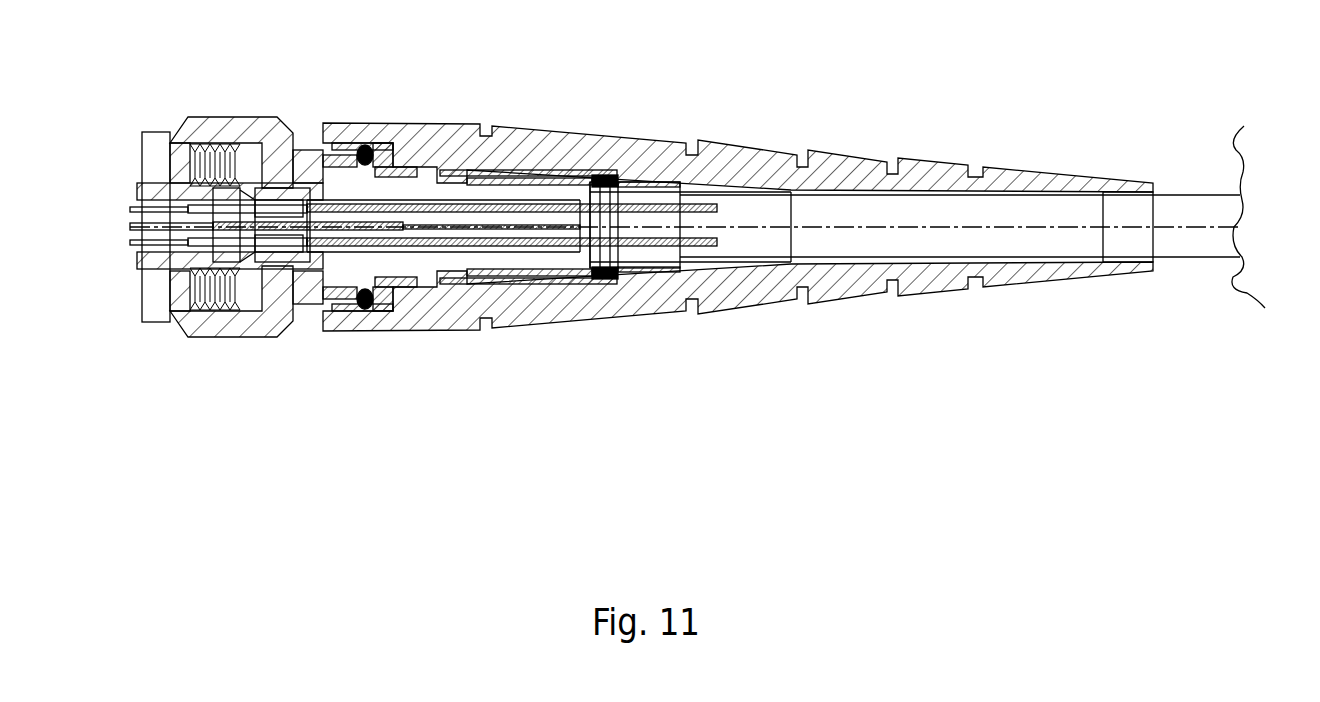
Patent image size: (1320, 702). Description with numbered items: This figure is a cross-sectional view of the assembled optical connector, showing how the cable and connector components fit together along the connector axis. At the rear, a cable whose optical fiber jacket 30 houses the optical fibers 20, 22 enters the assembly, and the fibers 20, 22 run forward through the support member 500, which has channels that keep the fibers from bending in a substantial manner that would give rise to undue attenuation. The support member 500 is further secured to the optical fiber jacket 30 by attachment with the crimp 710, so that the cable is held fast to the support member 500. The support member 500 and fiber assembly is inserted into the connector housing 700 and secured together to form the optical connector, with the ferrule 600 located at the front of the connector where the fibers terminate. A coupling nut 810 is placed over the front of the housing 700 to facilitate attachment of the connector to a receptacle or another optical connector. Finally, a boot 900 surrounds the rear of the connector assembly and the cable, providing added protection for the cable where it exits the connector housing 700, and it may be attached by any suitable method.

The optical fiber 20 is at (652, 210).
The optical fiber 22 is at (600, 227).
The optical fiber jacket 30 is at (1202, 195).
The support member 500 is at (403, 193).
The ferrule 600 is at (165, 178).
The connector housing 700 is at (428, 287).
The crimp 710 is at (578, 282).
The coupling nut 810 is at (215, 322).
The boot 900 is at (770, 160).